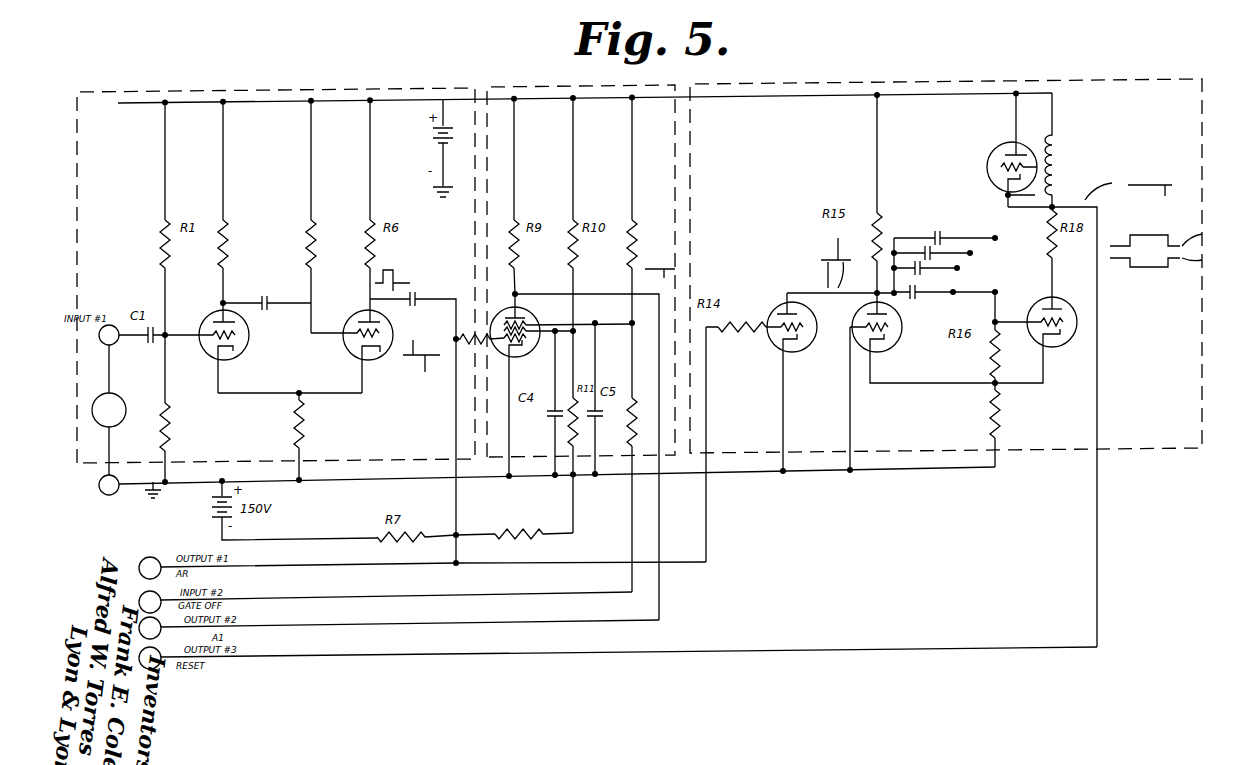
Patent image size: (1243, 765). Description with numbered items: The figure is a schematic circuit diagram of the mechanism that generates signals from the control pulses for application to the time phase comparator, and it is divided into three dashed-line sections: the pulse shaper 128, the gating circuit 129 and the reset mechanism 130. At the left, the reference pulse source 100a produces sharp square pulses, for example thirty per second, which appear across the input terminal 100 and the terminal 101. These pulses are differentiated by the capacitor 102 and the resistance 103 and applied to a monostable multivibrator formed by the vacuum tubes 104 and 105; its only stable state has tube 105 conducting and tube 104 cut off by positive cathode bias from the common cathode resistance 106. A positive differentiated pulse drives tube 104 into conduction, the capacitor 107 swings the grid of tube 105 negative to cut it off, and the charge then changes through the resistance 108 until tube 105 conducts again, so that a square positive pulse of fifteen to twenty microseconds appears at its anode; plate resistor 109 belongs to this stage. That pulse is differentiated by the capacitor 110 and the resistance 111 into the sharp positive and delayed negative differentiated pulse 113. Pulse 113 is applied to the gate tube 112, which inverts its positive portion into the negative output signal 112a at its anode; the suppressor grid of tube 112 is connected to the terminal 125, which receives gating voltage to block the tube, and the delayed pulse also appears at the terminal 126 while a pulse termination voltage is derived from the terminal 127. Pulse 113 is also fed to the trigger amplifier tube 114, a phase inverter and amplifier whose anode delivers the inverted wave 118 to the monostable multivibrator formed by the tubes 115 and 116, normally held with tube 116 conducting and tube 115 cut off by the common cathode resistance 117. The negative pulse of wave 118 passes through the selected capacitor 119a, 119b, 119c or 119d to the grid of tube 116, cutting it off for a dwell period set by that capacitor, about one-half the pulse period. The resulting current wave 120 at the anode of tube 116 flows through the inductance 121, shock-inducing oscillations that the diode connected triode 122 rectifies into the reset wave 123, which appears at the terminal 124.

The input terminal 100 is at (99, 334).
The reference pulse source 100a is at (125, 405).
The terminal 101 is at (114, 495).
The capacitor 102 is at (151, 344).
The resistance 103 is at (172, 440).
The vacuum tube 104 is at (249, 334).
The vacuum tube 105 is at (390, 334).
The common cathode resistance 106 is at (296, 440).
The capacitor 107 is at (262, 302).
The resistance 108 is at (318, 256).
The plate resistor R3 109 is at (232, 250).
The capacitor 110 is at (425, 292).
The resistance 111 is at (500, 533).
The gate tube 112 is at (526, 316).
The output signal 112a is at (648, 293).
The differentiated pulse 113 is at (421, 365).
The trigger amplifier tube 114 is at (787, 291).
The tube 115 is at (853, 316).
The tube 116 is at (1078, 322).
The common cathode resistance 117 is at (1000, 416).
The wave 118 is at (827, 259).
The selected capacitor 119a is at (956, 296).
The selected capacitor 119b is at (930, 273).
The selected capacitor 119c is at (937, 265).
The selected capacitor 119d is at (950, 231).
The current wave 120 is at (1161, 259).
The inductance 121 is at (1062, 168).
The diode connected triode 122 is at (986, 160).
The reset wave 123 is at (1128, 202).
The terminal 124 is at (158, 668).
The terminal 125 is at (140, 595).
The terminal 126 is at (161, 632).
The terminal 127 is at (160, 558).
The pulse shaper 128 is at (266, 88).
The gating circuit 129 is at (524, 87).
The reset mechanism 130 is at (894, 80).